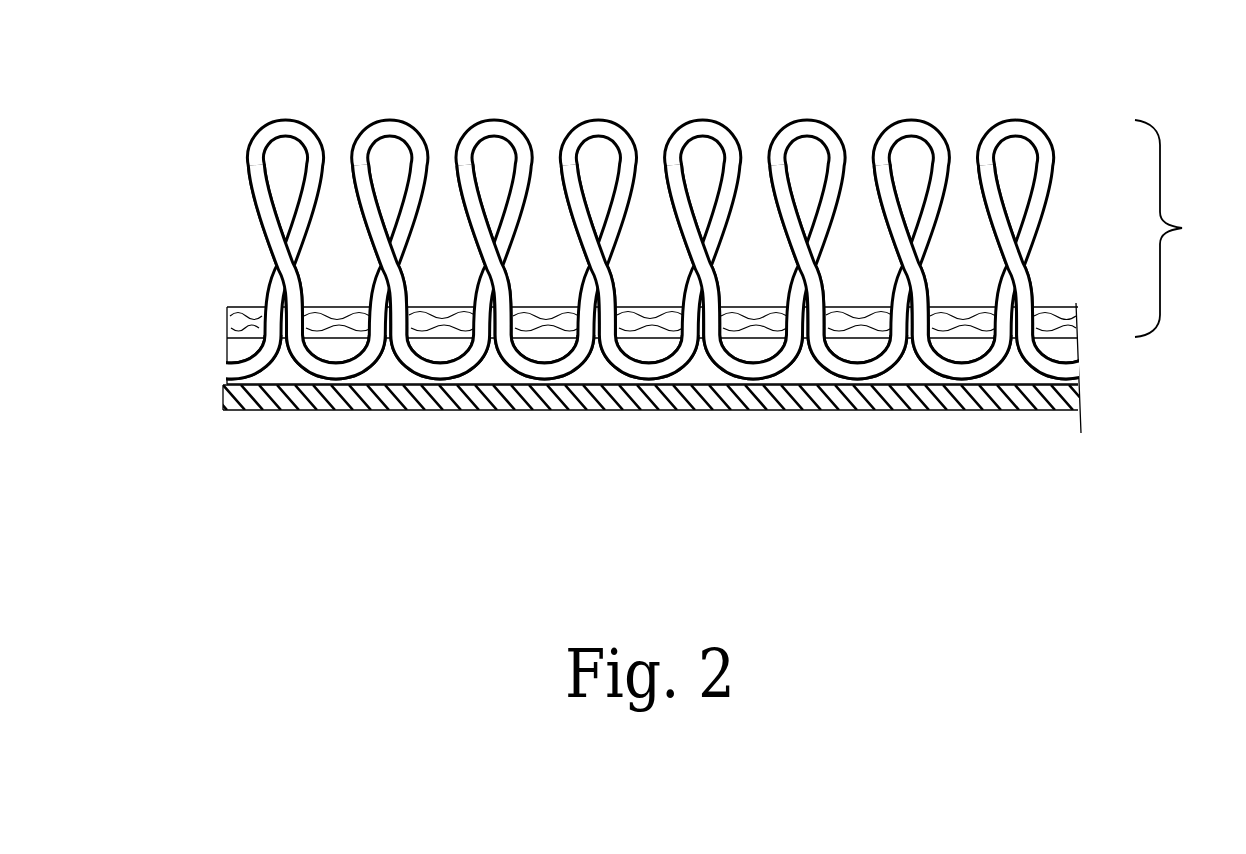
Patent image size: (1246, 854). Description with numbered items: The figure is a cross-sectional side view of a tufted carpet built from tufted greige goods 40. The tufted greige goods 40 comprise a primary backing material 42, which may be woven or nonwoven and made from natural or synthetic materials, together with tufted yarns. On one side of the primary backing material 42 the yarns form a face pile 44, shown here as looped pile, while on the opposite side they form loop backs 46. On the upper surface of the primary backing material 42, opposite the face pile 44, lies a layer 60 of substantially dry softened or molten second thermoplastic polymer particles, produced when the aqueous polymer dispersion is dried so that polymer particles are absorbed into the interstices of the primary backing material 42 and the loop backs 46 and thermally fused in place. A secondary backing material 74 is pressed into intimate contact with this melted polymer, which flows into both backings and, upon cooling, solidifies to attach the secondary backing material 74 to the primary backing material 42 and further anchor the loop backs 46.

The tufted greige goods 40 is at (1183, 228).
The primary backing material 42 is at (238, 305).
The face pile 44 is at (648, 275).
The loop backs 46 is at (442, 365).
The layer of substantially dry softened or molten second thermoplastic polymer parti 60 is at (283, 373).
The secondary backing material 74 is at (945, 382).